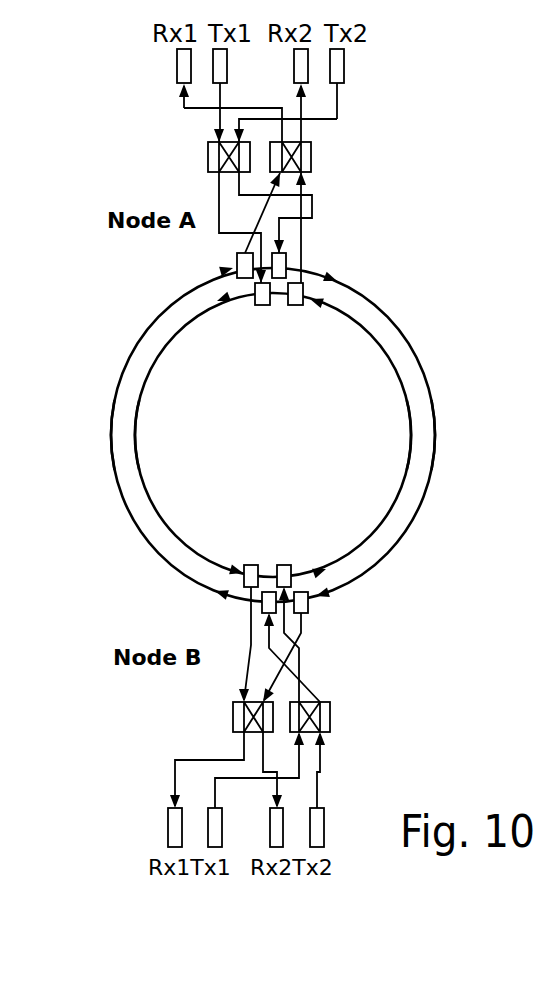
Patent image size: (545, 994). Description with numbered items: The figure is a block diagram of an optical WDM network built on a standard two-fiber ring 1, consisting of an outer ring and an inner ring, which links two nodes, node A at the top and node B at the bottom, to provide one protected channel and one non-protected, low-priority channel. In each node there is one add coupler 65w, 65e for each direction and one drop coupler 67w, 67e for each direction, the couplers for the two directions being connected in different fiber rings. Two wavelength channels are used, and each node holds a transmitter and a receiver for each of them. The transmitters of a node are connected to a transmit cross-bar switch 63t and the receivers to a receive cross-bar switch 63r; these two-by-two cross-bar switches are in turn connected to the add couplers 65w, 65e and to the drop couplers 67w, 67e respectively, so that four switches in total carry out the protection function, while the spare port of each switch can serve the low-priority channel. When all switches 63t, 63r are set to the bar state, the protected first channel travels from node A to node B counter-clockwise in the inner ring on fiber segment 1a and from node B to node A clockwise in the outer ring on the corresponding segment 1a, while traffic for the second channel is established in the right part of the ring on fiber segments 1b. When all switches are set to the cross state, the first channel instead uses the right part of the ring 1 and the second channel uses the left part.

The two-fiber ring 1 is at (140, 339).
The fiber segment 1a is at (111, 436).
The fiber segment 1b is at (435, 437).
The cross-bar switch 63t is at (360, 719).
The cross-bar switch 63r is at (311, 158).
The add coupler 65e is at (258, 305).
The add coupler 65w is at (286, 262).
The drop coupler 67e is at (338, 624).
The drop coupler 67w is at (297, 305).